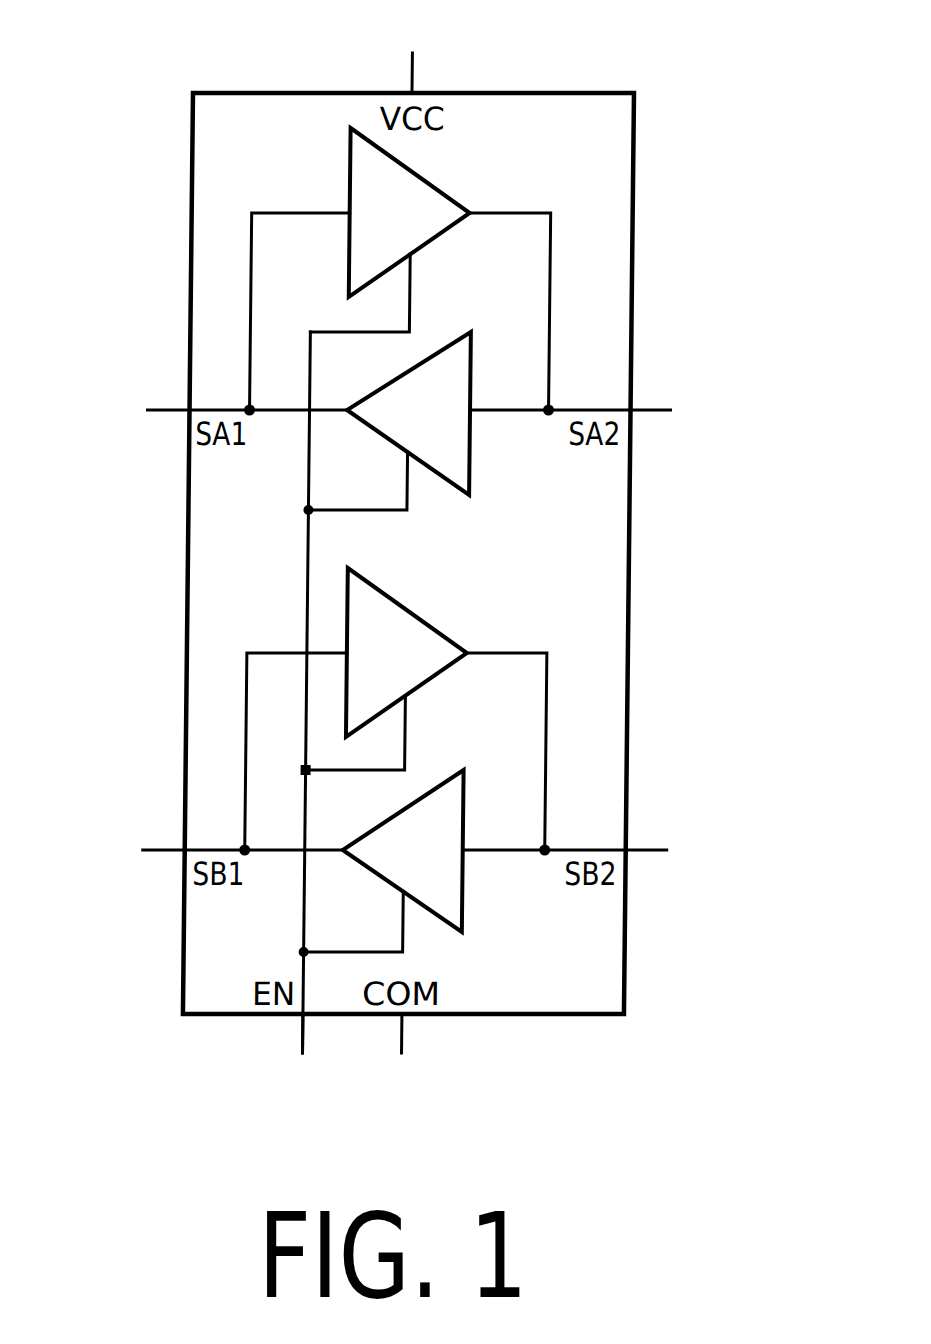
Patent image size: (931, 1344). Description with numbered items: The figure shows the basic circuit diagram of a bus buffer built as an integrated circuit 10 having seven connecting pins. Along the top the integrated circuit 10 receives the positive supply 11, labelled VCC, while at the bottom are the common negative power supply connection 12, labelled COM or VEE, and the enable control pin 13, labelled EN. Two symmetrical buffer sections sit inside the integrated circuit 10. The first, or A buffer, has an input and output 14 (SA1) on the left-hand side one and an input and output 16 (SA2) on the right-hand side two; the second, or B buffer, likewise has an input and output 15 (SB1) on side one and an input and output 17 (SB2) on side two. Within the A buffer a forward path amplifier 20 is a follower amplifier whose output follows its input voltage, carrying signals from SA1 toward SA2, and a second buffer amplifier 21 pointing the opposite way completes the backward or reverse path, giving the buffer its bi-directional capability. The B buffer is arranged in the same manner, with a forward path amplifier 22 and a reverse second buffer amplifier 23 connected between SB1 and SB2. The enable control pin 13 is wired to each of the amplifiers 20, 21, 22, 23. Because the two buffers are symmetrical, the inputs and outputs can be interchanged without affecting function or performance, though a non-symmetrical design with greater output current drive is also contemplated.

The integrated circuit 10 is at (193, 84).
The positive supply 11 is at (416, 43).
The common negative power supply connection 12 is at (417, 1065).
The enable control pin 13 is at (307, 1063).
The input and output SA1 14 is at (137, 408).
The input and output SB1 15 is at (139, 848).
The input and output SA2 16 is at (687, 405).
The input and output SB2 17 is at (687, 852).
The forward path amplifier 20 is at (472, 200).
The second buffer amplifier 21 is at (492, 470).
The forward path amplifier 22 is at (475, 637).
The second buffer amplifier 23 is at (493, 910).